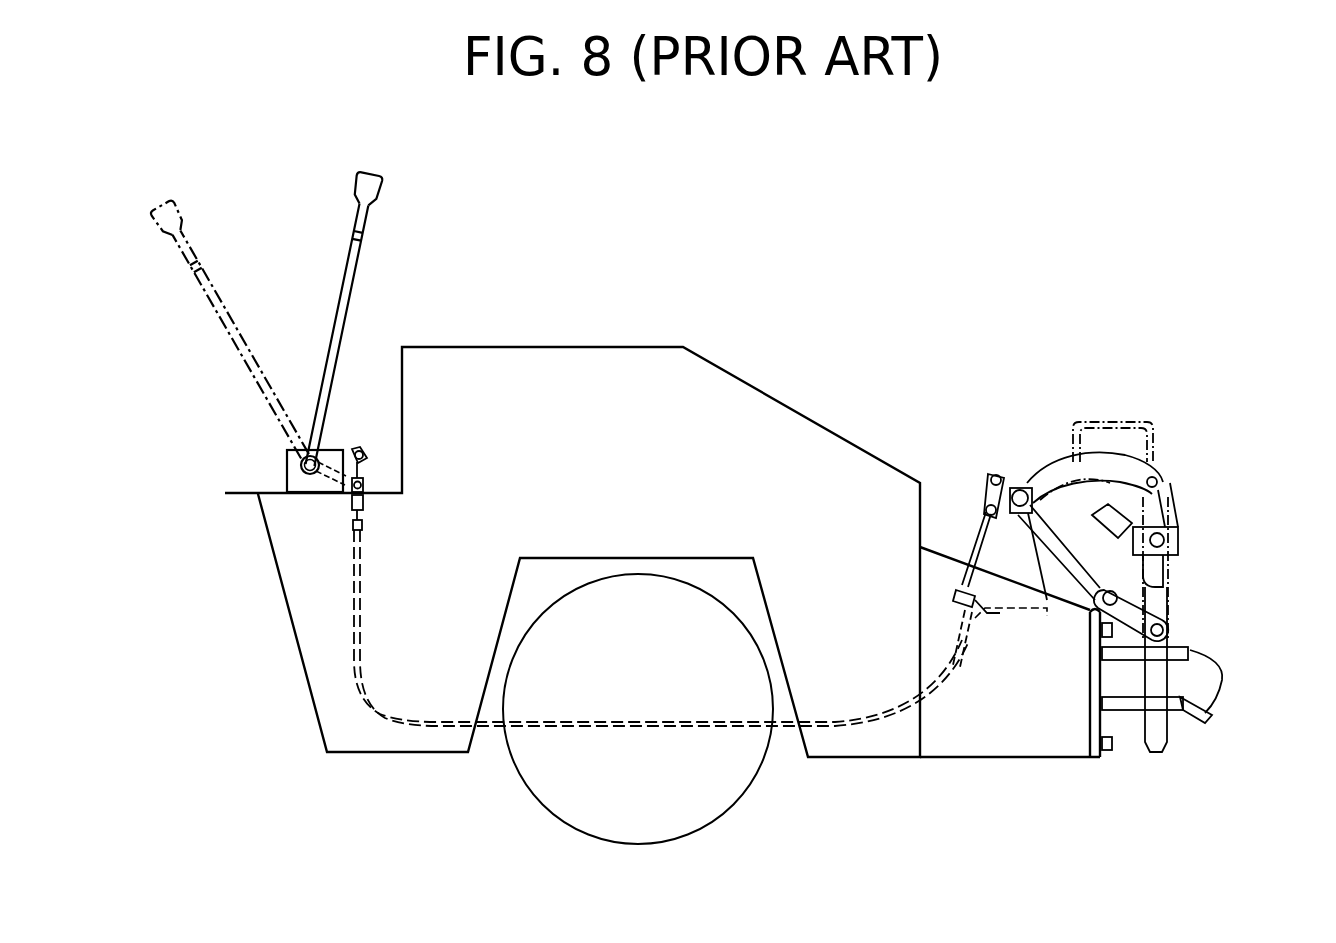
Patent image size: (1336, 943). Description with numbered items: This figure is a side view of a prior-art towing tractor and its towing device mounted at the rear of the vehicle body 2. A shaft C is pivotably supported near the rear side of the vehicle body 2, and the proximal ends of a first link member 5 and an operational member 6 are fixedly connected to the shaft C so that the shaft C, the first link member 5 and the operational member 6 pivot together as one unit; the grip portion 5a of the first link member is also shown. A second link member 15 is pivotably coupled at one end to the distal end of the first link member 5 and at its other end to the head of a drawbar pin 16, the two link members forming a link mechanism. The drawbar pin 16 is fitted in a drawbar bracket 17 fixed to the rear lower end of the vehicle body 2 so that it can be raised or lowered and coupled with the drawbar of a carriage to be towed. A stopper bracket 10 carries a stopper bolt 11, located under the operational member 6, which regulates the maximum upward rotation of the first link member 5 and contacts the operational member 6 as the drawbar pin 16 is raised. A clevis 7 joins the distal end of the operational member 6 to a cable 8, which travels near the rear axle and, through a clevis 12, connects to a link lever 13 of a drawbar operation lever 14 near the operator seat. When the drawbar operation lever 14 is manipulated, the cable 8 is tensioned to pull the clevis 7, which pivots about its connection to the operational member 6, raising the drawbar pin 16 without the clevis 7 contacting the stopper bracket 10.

The vehicle body 2 is at (862, 470).
The first link member 5 is at (1097, 542).
The lever grip 5a is at (1110, 505).
The operational member 6 is at (1012, 480).
The clevis 7 is at (988, 497).
The cable 8 is at (823, 724).
The stopper bracket 10 is at (1040, 561).
The stopper bolt 11 is at (1014, 608).
The clevis 12 is at (367, 500).
The link lever 13 is at (366, 474).
The drawbar operation lever 14 is at (352, 247).
The second link member 15 is at (1127, 605).
The drawbar pin 16 is at (1170, 632).
The drawbar bracket 17 is at (1182, 669).
The shaft C is at (1025, 480).